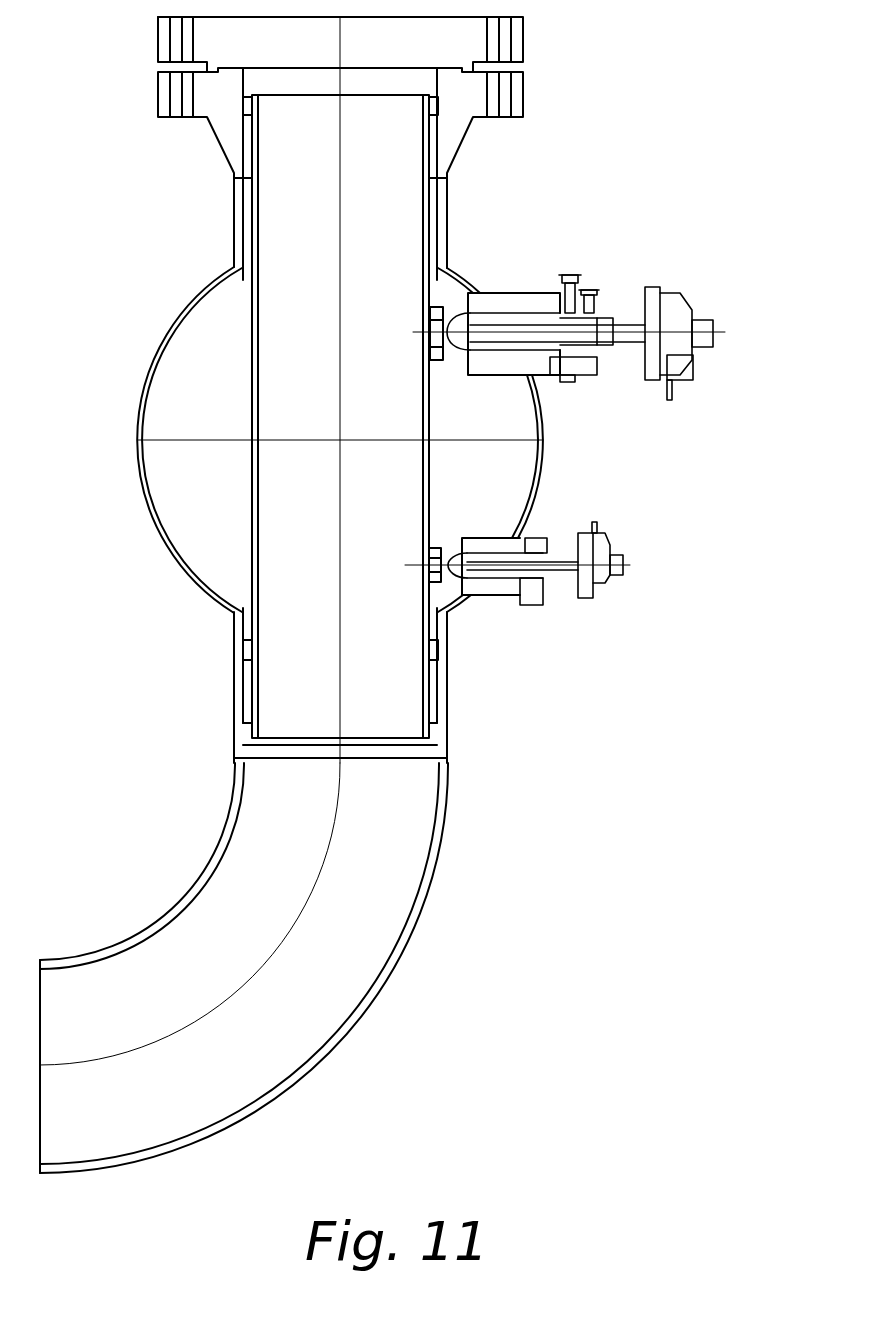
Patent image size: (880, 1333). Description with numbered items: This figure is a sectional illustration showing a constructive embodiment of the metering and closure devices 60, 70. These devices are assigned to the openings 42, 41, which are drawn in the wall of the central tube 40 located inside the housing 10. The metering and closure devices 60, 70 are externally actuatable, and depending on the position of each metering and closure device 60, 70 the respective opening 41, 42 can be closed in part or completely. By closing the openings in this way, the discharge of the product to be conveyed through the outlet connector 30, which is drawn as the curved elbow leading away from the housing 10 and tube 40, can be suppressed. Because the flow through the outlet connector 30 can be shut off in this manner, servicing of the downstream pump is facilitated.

The spherical housing 10 is at (140, 418).
The outlet connector 30 is at (345, 1036).
The liner tube 40 is at (250, 325).
The opening 41 is at (418, 570).
The opening 42 is at (417, 333).
The metering and closure device 60 is at (617, 573).
The metering and closure device 70 is at (667, 297).